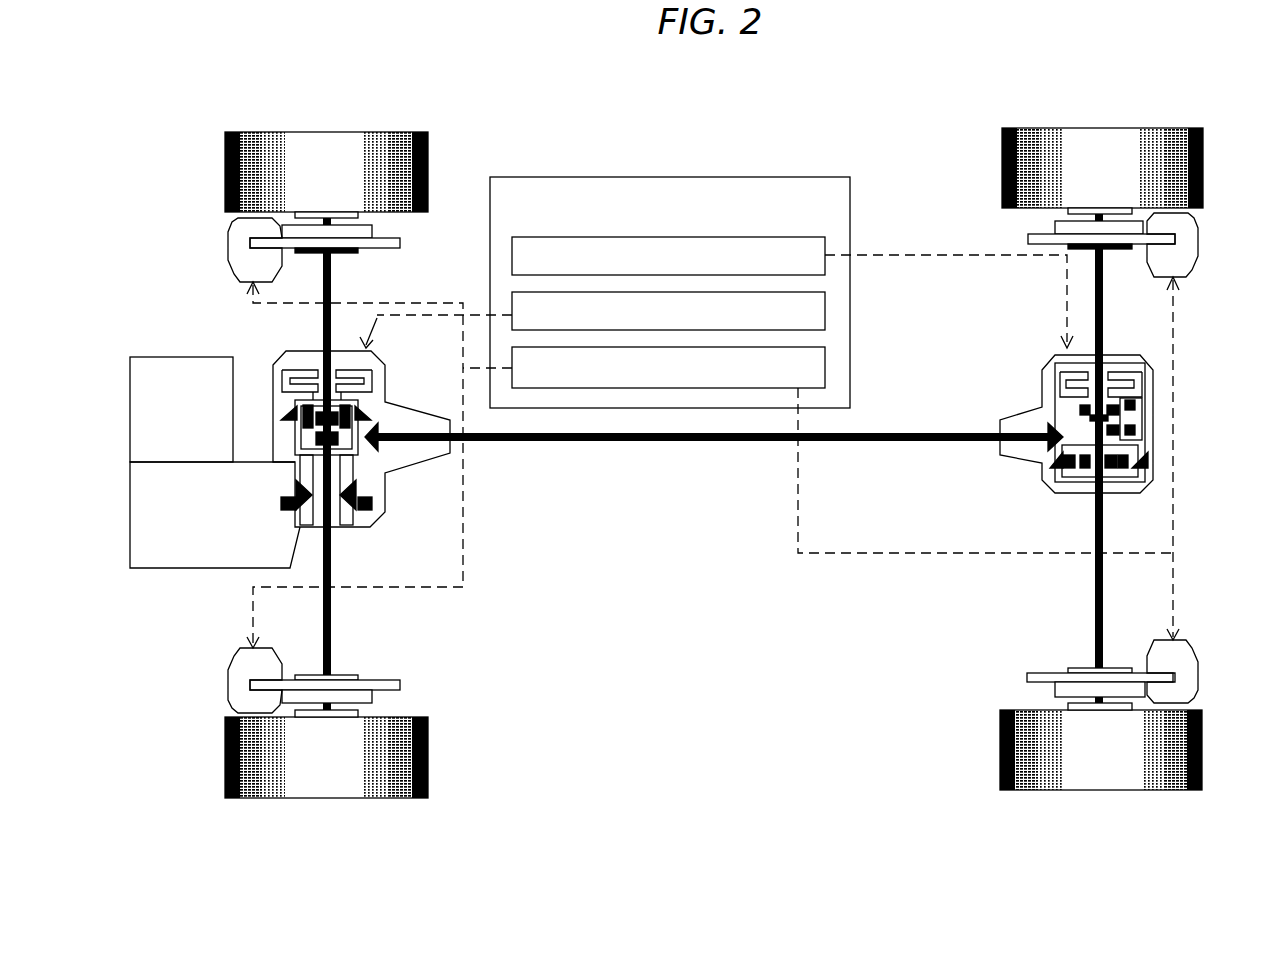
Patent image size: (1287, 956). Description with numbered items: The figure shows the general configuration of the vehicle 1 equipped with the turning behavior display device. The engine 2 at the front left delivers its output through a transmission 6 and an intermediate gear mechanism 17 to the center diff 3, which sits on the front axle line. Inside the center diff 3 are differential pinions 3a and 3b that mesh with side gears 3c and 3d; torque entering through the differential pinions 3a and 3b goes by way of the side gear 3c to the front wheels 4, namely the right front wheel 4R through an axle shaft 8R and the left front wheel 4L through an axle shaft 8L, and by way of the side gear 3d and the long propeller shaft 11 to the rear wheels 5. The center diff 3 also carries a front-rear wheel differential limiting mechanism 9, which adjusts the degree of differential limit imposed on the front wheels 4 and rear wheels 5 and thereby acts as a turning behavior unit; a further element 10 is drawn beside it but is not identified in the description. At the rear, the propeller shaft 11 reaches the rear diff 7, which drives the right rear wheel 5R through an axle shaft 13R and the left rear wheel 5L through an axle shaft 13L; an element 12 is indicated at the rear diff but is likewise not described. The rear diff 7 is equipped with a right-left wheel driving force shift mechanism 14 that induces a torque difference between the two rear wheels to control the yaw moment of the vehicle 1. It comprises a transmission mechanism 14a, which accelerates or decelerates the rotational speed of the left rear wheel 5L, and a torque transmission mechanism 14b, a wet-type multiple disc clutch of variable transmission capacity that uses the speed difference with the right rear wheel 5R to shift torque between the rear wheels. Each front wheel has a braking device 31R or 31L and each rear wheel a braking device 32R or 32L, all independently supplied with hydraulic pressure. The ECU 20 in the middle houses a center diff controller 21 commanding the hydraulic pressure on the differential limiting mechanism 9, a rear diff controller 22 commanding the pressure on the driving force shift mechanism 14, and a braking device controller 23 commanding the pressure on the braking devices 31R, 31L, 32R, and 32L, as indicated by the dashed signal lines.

The vehicle 1 is at (630, 142).
The engine 2 is at (150, 357).
The center diff 3 is at (380, 518).
The differential pinion 3a is at (296, 494).
The differential pinion 3b is at (356, 494).
The side gear 3c is at (300, 527).
The side gear 3d is at (292, 466).
The front wheels 4 is at (378, 810).
The right front wheel 4R is at (228, 183).
The left front wheel 4L is at (228, 775).
The rear wheels 5 is at (1152, 797).
The right rear wheel 5R is at (1205, 155).
The left rear wheel 5L is at (1203, 775).
The transmission 6 is at (180, 568).
The rear diff 7 is at (1160, 465).
The axle shaft 8R is at (323, 326).
The axle shaft 8L is at (331, 570).
The front-rear wheel differential limiting mechanism 9 is at (346, 357).
The center differential limiting clutch 10 is at (385, 410).
The propeller shaft 11 is at (570, 445).
The rear differential 12 is at (1030, 452).
The axle shaft 13R is at (1103, 337).
The axle shaft 13L is at (1095, 575).
The right-left wheel driving force shift mechanism 14 is at (1142, 356).
The transmission mechanism 14a is at (1150, 422).
The torque transmission mechanism 14b is at (1150, 386).
The intermediate gear mechanism 17 is at (292, 408).
The ECU 20 is at (850, 213).
The center diff controller 21 is at (825, 315).
The rear diff controller 22 is at (748, 237).
The braking device controller 23 is at (825, 370).
The braking device 31R is at (228, 243).
The braking device 31L is at (228, 690).
The braking device 32R is at (1200, 242).
The braking device 32L is at (1200, 675).